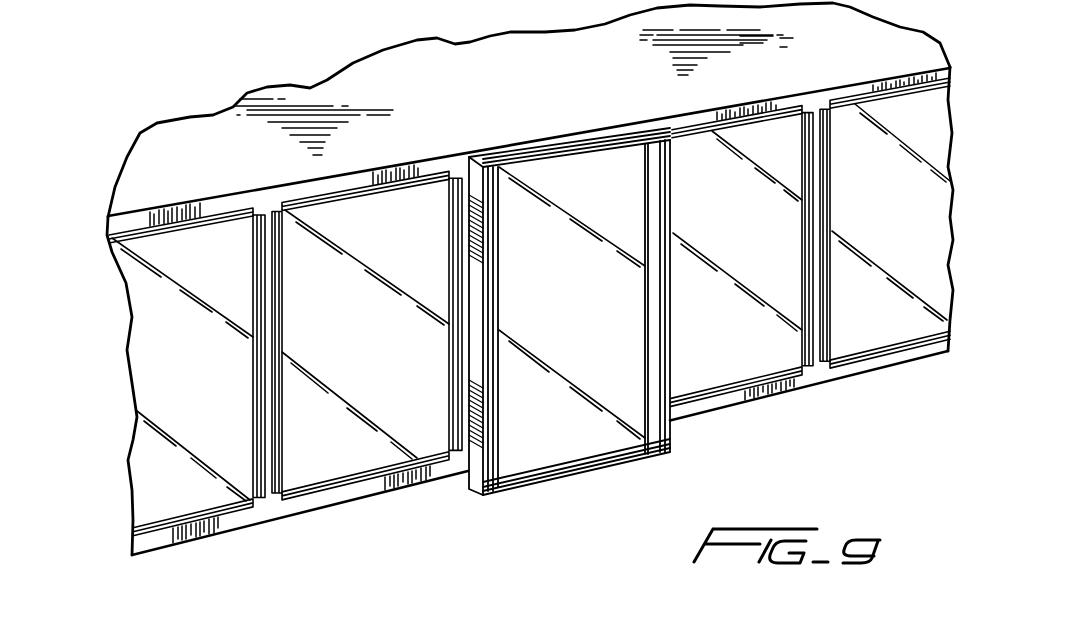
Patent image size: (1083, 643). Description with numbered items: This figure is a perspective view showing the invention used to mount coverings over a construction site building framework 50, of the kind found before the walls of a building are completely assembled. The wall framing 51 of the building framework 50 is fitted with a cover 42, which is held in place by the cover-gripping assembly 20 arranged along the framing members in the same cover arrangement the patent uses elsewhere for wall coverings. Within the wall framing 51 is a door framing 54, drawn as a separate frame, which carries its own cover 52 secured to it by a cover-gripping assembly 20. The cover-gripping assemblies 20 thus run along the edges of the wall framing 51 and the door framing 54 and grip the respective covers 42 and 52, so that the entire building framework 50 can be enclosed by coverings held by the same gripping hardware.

The cover-gripping assembly 20 is at (435, 167).
The cover 42 is at (391, 322).
The building framework 50 is at (530, 279).
The wall framing 51 is at (213, 207).
The cover 52 is at (569, 291).
The door framing 54 is at (493, 153).